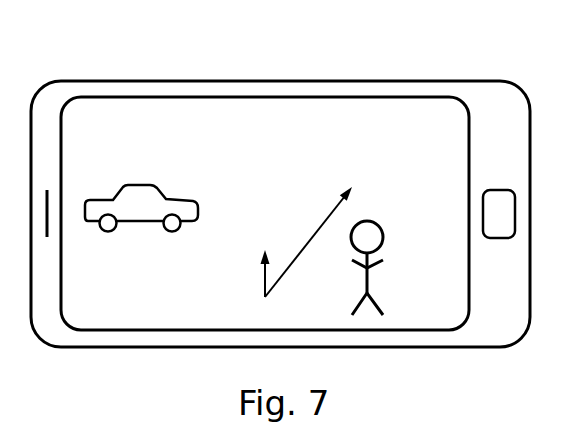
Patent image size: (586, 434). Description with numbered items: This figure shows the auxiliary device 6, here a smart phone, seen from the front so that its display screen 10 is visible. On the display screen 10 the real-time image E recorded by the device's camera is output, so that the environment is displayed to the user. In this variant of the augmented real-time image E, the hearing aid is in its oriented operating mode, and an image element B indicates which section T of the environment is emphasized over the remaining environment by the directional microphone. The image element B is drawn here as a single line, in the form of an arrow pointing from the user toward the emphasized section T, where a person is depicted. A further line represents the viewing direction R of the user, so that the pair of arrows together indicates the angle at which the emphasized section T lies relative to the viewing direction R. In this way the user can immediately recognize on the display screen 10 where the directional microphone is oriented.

The auxiliary device 6 is at (79, 80).
The display screen 10 is at (155, 97).
The real-time image E is at (93, 150).
The section of the environment T is at (364, 204).
The image element B is at (318, 229).
The viewing direction R is at (262, 258).